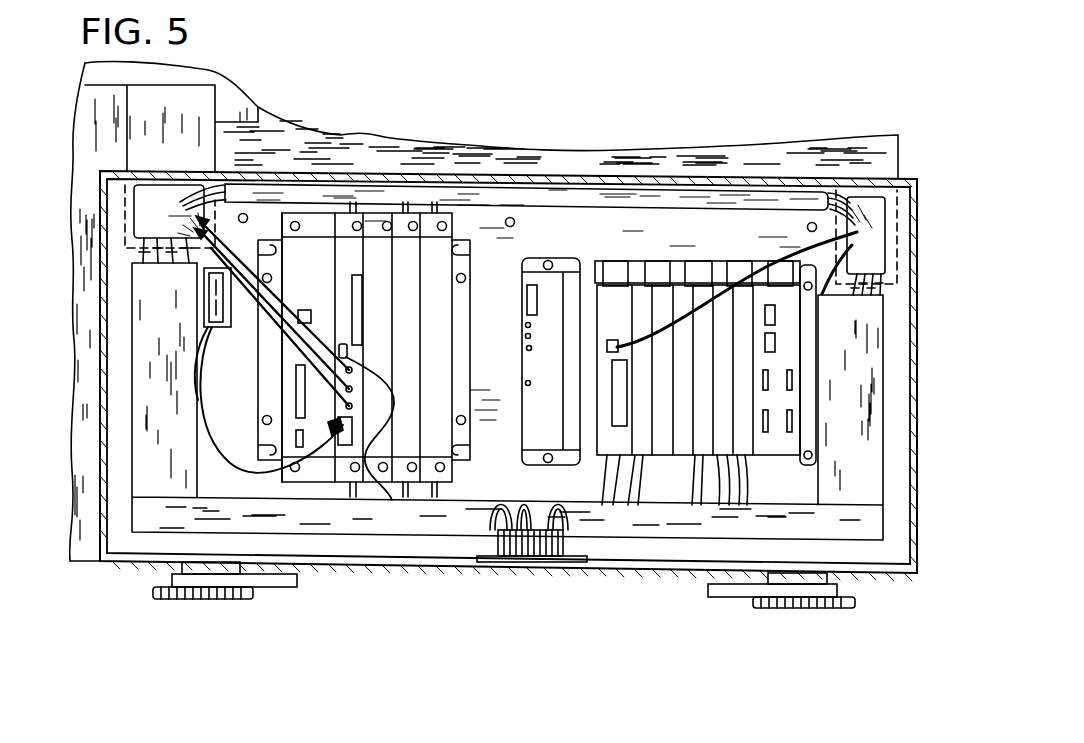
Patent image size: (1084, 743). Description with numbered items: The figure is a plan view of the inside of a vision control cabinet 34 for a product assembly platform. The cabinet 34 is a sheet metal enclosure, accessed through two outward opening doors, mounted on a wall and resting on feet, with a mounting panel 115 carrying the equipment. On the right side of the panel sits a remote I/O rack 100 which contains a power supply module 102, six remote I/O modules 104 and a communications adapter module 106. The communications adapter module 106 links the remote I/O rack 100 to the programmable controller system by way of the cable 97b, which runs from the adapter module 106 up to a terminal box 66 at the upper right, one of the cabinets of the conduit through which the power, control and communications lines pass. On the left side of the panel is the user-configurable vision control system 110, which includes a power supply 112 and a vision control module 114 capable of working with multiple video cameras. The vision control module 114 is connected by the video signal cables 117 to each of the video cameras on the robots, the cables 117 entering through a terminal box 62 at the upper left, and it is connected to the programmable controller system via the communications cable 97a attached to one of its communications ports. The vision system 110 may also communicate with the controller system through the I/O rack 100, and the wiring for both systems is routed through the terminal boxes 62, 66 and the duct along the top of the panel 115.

The vision control cabinet 34 is at (128, 563).
The left terminal box 62 is at (167, 222).
The cabinet of the conduit 66 is at (872, 233).
The communications cable 97a is at (376, 366).
The cable 97b is at (768, 258).
The remote I/O rack 100 is at (512, 298).
The power supply module 102 is at (560, 421).
The remote I/O modules 104 is at (716, 461).
The communications adapter module 106 is at (608, 261).
The vision control system 110 is at (254, 367).
The power supply 112 is at (328, 276).
The vision control module 114 is at (370, 257).
The mounting panel 115 is at (183, 425).
The video signal cables 117 is at (204, 252).